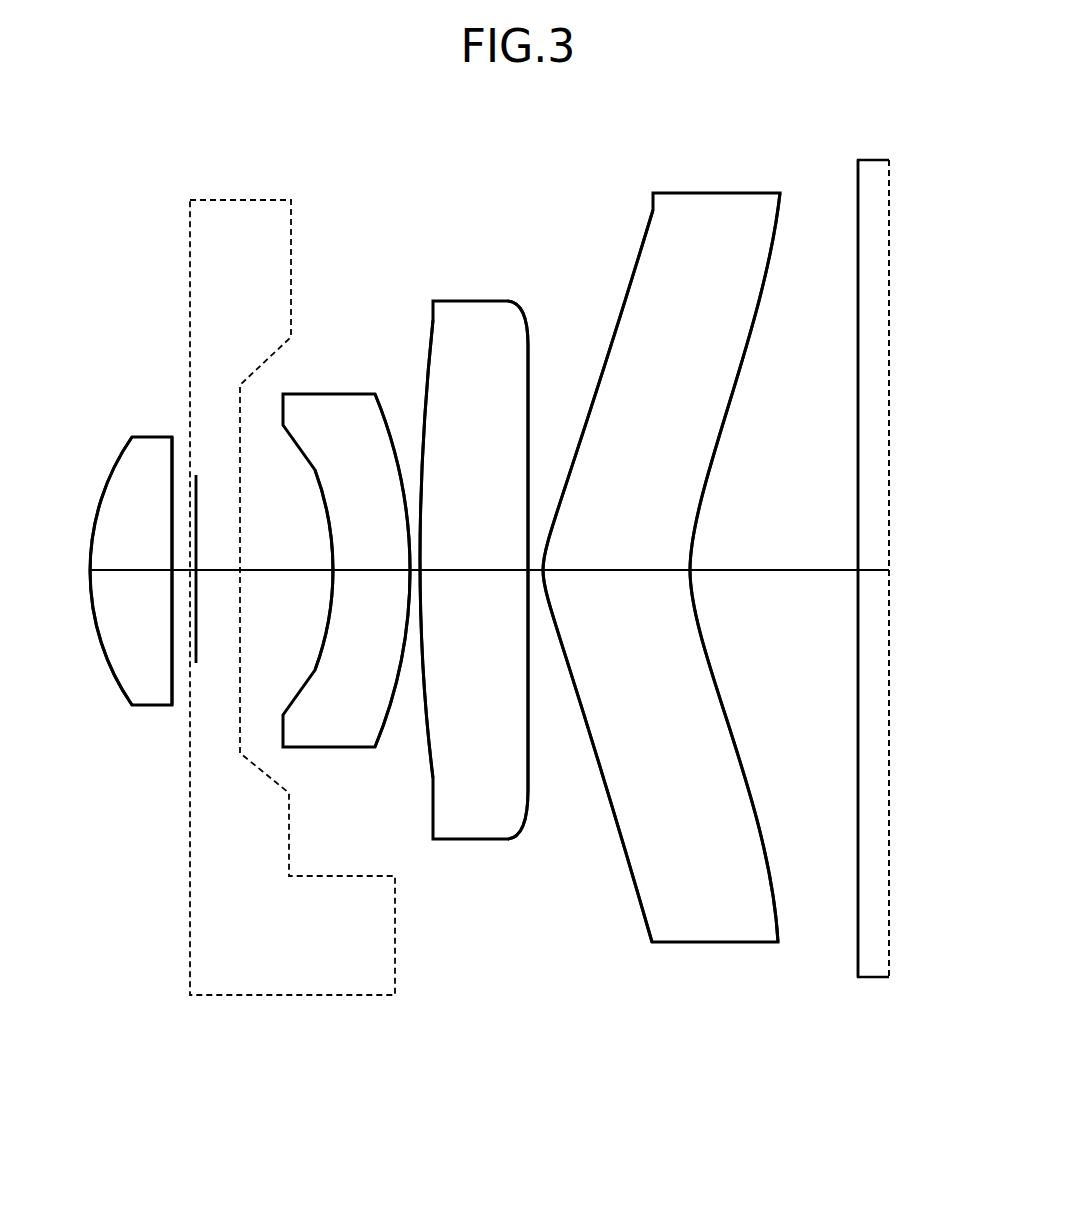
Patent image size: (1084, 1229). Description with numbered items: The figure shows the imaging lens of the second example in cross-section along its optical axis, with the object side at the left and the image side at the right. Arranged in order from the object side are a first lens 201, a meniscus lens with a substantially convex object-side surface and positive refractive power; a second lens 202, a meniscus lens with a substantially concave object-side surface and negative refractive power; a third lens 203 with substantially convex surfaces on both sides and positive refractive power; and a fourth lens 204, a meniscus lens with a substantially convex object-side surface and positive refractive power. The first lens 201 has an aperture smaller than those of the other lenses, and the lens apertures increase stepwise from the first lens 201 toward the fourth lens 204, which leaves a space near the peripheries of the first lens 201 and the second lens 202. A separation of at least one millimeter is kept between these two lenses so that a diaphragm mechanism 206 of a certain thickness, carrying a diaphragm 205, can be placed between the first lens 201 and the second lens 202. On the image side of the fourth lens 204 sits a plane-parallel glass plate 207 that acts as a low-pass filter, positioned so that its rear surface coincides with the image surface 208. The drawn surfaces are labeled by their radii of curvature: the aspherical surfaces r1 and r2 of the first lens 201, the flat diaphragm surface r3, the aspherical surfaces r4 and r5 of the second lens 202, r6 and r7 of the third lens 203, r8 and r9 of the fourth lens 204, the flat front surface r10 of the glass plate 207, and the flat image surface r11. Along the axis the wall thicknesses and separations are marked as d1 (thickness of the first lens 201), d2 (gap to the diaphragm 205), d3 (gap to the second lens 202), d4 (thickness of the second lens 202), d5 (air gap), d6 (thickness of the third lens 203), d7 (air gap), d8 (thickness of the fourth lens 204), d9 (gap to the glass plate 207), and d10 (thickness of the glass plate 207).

The first lens 201 is at (173, 1035).
The second lens 202 is at (283, 1035).
The third lens 203 is at (418, 1035).
The fourth lens 204 is at (542, 1035).
The diaphragm 205 is at (200, 527).
The diaphragm mechanism 206 is at (258, 200).
The plane-parallel glass plate 207 is at (880, 160).
The image surface 208 is at (890, 588).
The radius of curvature of first surface r1 is at (110, 477).
The radius of curvature of second surface r2 is at (172, 470).
The diaphragm surface r3 is at (197, 478).
The radius of curvature of fourth surface r4 is at (316, 470).
The radius of curvature of fifth surface r5 is at (383, 410).
The radius of curvature of sixth surface r6 is at (432, 332).
The radius of curvature of seventh surface r7 is at (528, 343).
The radius of curvature of eighth surface r8 is at (640, 245).
The radius of curvature of ninth surface r9 is at (781, 203).
The radius of curvature of tenth surface r10 is at (858, 175).
The radius of curvature of image surface r11 is at (890, 545).
The wall thickness of first lens d1 is at (130, 572).
The surface separation between first lens and diaphragm d2 is at (186, 572).
The surface separation between diaphragm and second lens d3 is at (246, 572).
The wall thickness of second lens d4 is at (373, 572).
The surface separation between second and third lenses d5 is at (416, 572).
The wall thickness of third lens d6 is at (473, 572).
The surface separation between third and fourth lenses d7 is at (538, 572).
The wall thickness of fourth lens d8 is at (628, 572).
The surface separation between fourth lens and glass plate d9 is at (767, 572).
The wall thickness of glass plate d10 is at (872, 572).